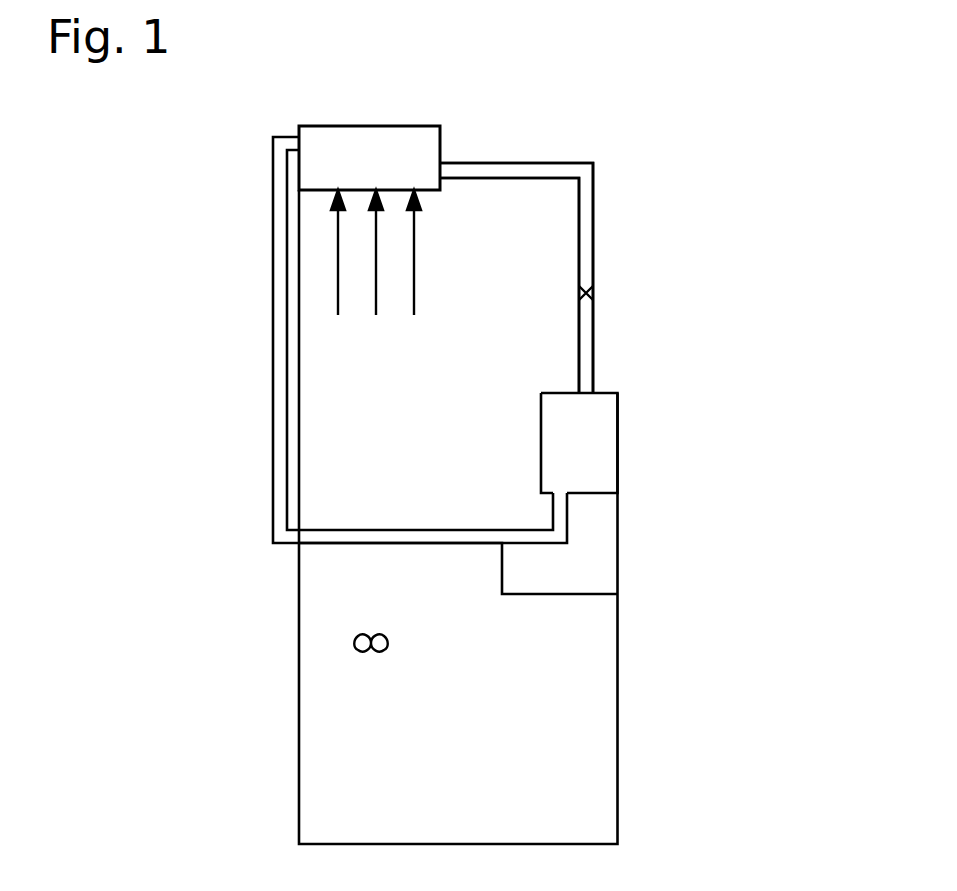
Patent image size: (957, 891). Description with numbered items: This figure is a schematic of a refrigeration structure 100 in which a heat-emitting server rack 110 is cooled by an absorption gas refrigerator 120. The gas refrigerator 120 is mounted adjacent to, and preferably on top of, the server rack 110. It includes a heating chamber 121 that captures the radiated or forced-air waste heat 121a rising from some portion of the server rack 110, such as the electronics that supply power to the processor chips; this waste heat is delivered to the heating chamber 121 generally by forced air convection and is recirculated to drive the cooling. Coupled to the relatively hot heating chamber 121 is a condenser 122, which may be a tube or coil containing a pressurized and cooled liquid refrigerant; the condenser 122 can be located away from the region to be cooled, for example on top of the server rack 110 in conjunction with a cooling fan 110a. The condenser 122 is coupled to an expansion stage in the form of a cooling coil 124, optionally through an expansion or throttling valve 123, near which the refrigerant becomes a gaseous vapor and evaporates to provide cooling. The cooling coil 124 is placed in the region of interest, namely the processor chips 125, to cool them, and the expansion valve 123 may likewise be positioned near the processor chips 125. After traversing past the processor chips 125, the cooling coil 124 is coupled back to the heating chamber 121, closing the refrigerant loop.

The refrigeration structure 100 is at (130, 150).
The server rack 110 is at (618, 807).
The cooling fan 110a is at (338, 642).
The absorption gas refrigerator 120 is at (770, 443).
The heating chamber 121 is at (390, 152).
The waste heat 121a is at (338, 252).
The condenser 122 is at (489, 202).
The expansion valve 123 is at (593, 293).
The cooling coil 124 is at (618, 432).
The processor chips 125 is at (375, 767).